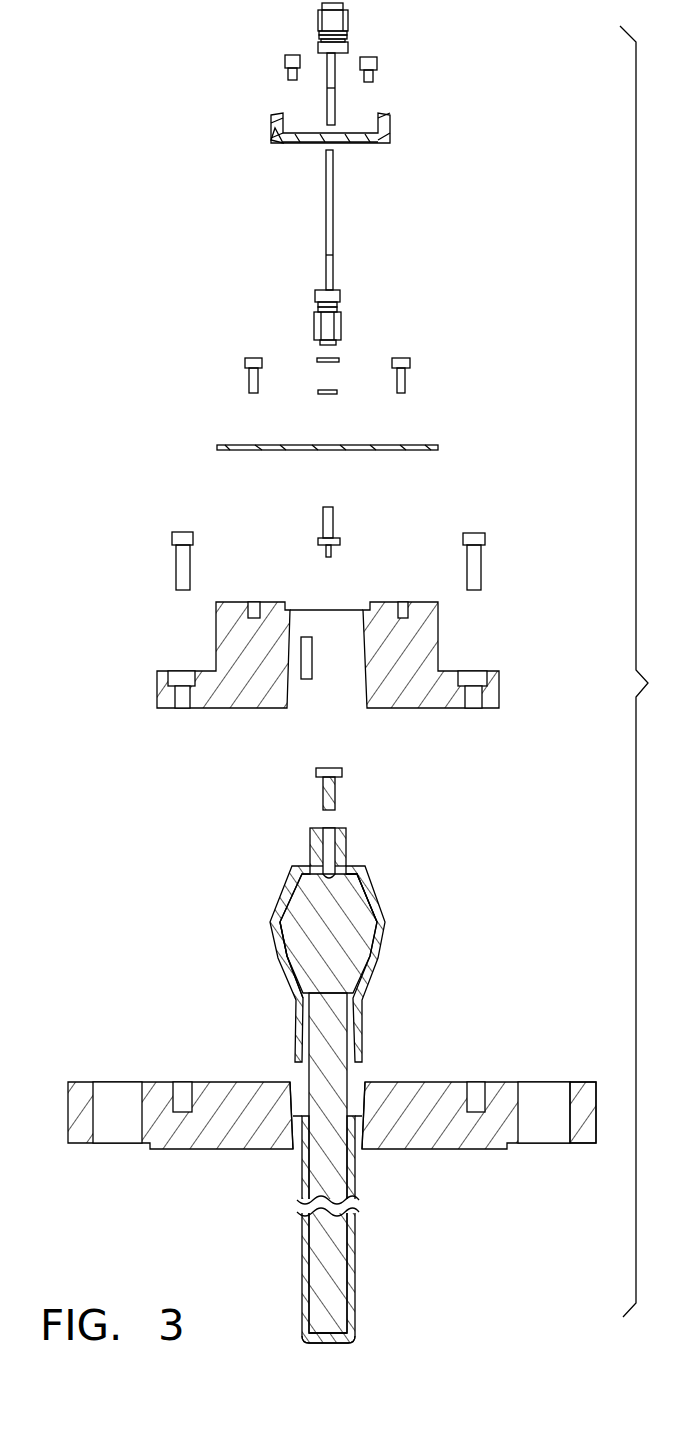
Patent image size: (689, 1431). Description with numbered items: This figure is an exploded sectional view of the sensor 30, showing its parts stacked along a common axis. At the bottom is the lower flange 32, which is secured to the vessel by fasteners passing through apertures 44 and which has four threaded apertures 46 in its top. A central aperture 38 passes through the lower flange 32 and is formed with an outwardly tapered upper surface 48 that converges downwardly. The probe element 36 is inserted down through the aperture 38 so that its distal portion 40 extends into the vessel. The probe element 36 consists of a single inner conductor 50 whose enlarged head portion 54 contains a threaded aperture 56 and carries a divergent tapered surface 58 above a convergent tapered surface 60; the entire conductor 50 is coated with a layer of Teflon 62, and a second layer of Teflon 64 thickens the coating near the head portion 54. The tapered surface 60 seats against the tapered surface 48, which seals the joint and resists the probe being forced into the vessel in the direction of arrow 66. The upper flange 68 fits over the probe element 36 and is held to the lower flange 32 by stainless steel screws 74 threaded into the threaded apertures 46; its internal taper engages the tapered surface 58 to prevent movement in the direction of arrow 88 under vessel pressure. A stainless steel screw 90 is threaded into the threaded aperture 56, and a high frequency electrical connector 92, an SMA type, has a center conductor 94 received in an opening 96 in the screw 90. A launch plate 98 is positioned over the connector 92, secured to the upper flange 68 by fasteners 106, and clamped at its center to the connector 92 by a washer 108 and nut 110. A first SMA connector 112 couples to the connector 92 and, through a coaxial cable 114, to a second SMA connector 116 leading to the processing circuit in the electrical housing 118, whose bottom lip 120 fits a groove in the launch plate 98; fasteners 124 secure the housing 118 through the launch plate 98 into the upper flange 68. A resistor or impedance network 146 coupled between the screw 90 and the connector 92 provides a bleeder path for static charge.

The sensor 30 is at (48, 633).
The lower flange 32 is at (313, 1068).
The probe element 36 is at (346, 1065).
The aperture 38 is at (362, 1140).
The distal portion 40 is at (364, 1335).
The apertures 44 is at (585, 1100).
The threaded apertures 46 is at (182, 1082).
The tapered upper surface 48 is at (368, 1095).
The inner conductor 50 is at (346, 1235).
The head portion 54 is at (332, 922).
The threaded aperture 56 is at (329, 832).
The tapered surface 58 is at (360, 872).
The tapered surface 60 is at (290, 965).
The layer of Teflon 62 is at (301, 1318).
The second layer of Teflon 64 is at (381, 890).
The arrow 66 is at (233, 1220).
The upper flange 68 is at (360, 667).
The stainless steel screws 74 is at (171, 552).
The arrow 88 is at (213, 784).
The stainless steel screw 90 is at (368, 775).
The high frequency electrical connector 92 is at (334, 512).
The center conductor 94 is at (332, 552).
The opening 96 is at (341, 770).
The launch plate 98 is at (434, 445).
The fasteners 106 is at (244, 362).
The washer 108 is at (338, 392).
The nut 110 is at (318, 360).
The first SMA connector 112 is at (341, 322).
The coaxial cable 114 is at (334, 206).
The second SMA connector 116 is at (349, 17).
The electrical housing 118 is at (391, 125).
The bottom lip 120 is at (276, 145).
The fasteners 124 is at (284, 58).
The resistor or impedance network 146 is at (312, 658).